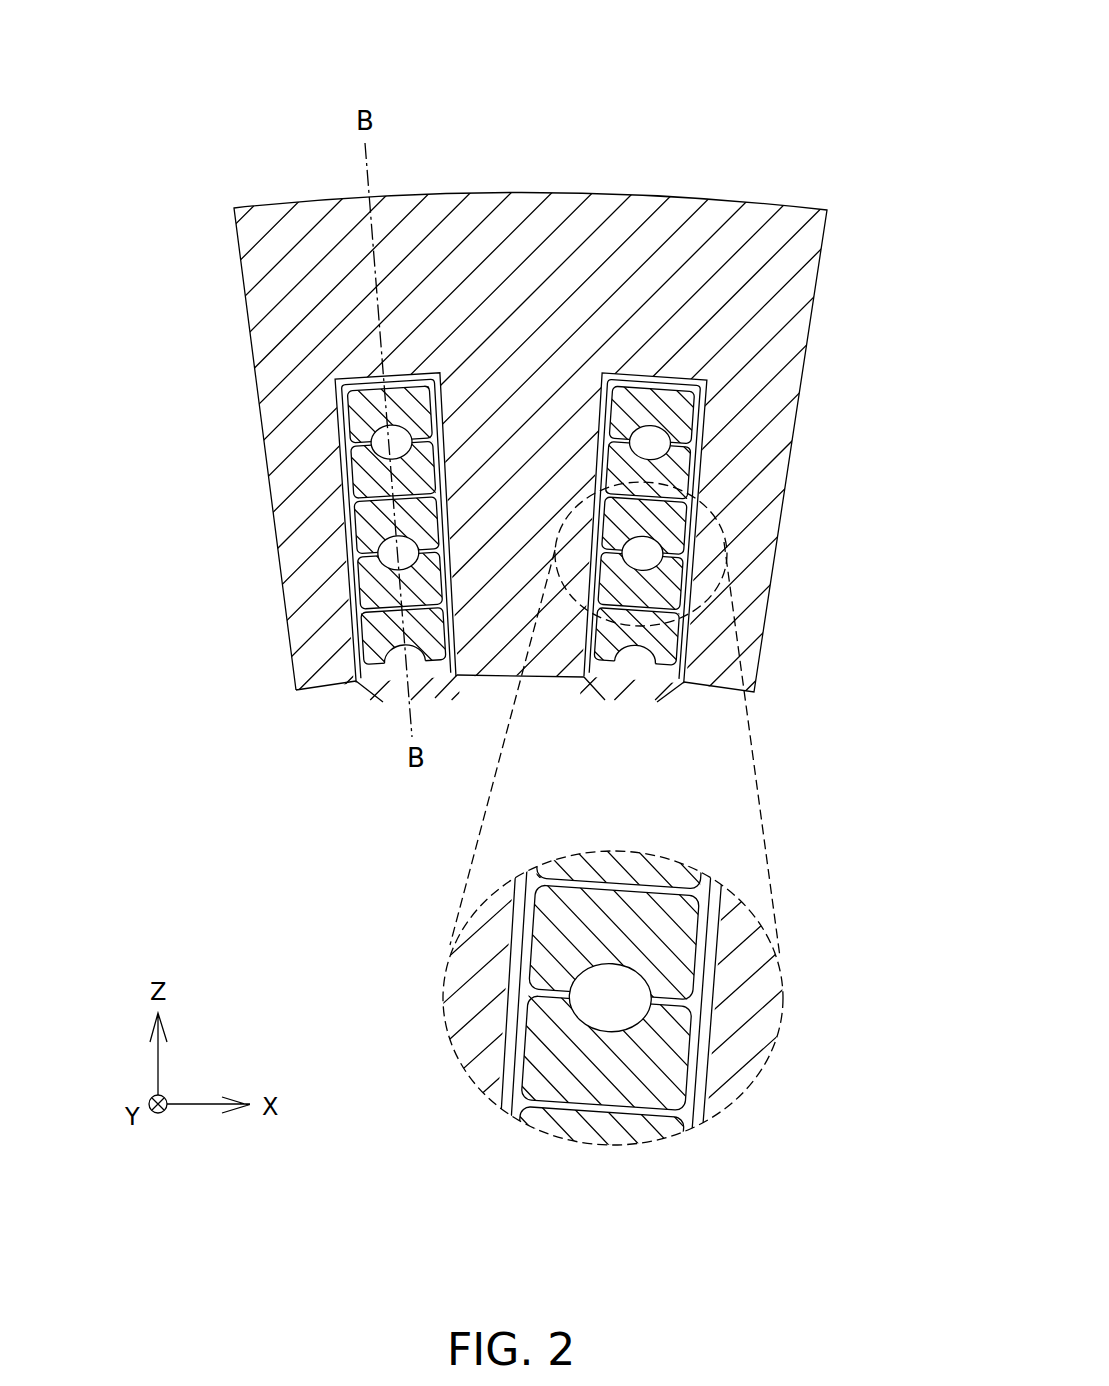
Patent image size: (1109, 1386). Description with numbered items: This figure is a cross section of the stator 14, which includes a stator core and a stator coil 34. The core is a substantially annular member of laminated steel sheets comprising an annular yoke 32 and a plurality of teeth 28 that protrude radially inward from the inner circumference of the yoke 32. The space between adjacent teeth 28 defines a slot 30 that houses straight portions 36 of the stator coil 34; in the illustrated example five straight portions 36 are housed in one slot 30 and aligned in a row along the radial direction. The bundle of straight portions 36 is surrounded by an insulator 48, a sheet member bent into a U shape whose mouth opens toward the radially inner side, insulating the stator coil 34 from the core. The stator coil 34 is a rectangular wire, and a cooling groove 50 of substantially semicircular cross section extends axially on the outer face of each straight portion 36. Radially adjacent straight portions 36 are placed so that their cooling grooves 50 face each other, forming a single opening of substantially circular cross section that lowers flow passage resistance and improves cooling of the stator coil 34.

The stator 14 is at (554, 691).
The teeth 28 is at (483, 660).
The slot 30 is at (392, 655).
The yoke 32 is at (718, 215).
The stator coil 34 is at (522, 880).
The straight portions 36 is at (370, 468).
The insulator 48 is at (663, 693).
The cooling groove 50 is at (633, 987).